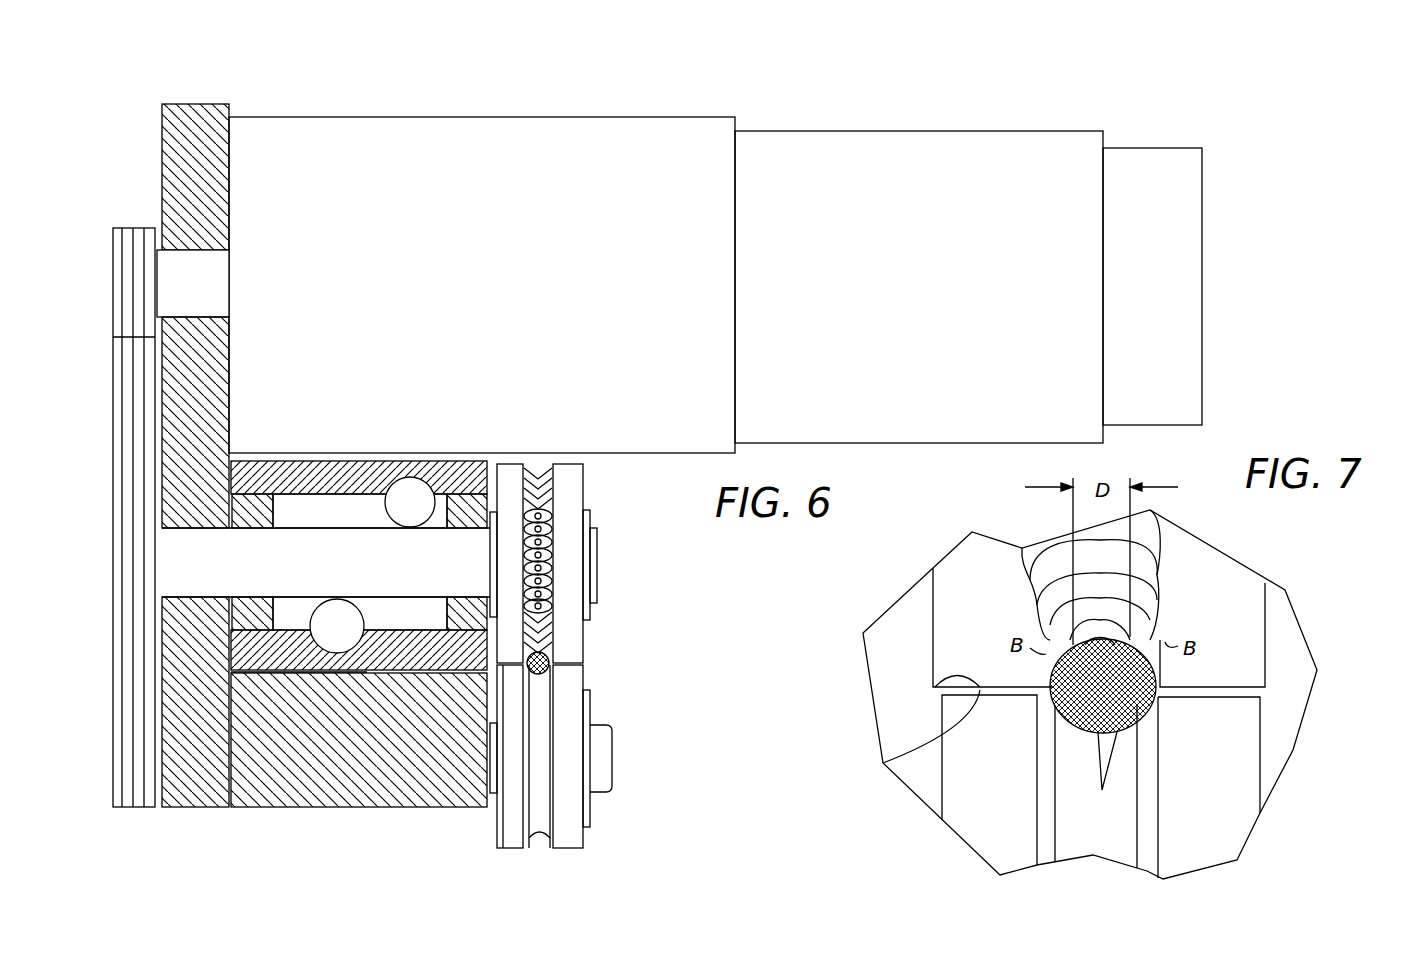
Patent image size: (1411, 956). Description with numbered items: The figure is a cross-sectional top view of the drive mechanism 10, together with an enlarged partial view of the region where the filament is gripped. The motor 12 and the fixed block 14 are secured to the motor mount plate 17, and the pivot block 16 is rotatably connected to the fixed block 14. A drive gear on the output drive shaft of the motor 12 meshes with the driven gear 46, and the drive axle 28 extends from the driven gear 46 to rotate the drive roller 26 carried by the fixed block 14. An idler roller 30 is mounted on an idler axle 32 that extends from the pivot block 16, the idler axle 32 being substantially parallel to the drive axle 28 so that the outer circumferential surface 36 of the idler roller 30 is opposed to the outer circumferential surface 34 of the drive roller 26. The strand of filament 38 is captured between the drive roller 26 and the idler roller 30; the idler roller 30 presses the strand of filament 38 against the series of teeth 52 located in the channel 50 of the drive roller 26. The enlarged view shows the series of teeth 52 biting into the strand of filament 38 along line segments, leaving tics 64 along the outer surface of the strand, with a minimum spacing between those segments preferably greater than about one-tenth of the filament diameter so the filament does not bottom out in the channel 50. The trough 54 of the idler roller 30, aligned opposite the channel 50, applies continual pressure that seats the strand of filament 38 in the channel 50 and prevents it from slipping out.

In FIG. 6, the drive mechanism 10 is at (305, 90).
In FIG. 6, the motor 12 is at (590, 117).
In FIG. 6, the fixed block 14 is at (331, 452).
In FIG. 6, the pivot block 16 is at (292, 818).
In FIG. 6, the motor mount plate 17 is at (185, 808).
In FIG. 6, the drive roller 26 is at (606, 480).
In FIG. 7, the drive roller 26 is at (921, 613).
In FIG. 6, the drive axle 28 is at (598, 566).
In FIG. 6, the idler roller 30 is at (597, 840).
In FIG. 7, the idler roller 30 is at (998, 808).
In FIG. 6, the idler axle 32 is at (603, 758).
In FIG. 6, the outer circumferential surface 34 is at (503, 452).
In FIG. 7, the outer circumferential surface 34 is at (935, 680).
In FIG. 6, the outer circumferential surface 36 is at (491, 855).
In FIG. 7, the outer circumferential surface 36 is at (883, 765).
In FIG. 6, the strand of filament 38 is at (553, 660).
In FIG. 7, the strand of filament 38 is at (1128, 640).
In FIG. 6, the driven gear 46 is at (113, 742).
In FIG. 6, the channel 50 is at (556, 454).
In FIG. 7, the channel 50 is at (1121, 566).
In FIG. 6, the series of teeth 52 is at (538, 470).
In FIG. 7, the series of teeth 52 is at (1075, 640).
In FIG. 6, the trough 54 is at (535, 845).
In FIG. 7, the trough 54 is at (1132, 727).
In FIG. 7, the tics 64 is at (1099, 776).